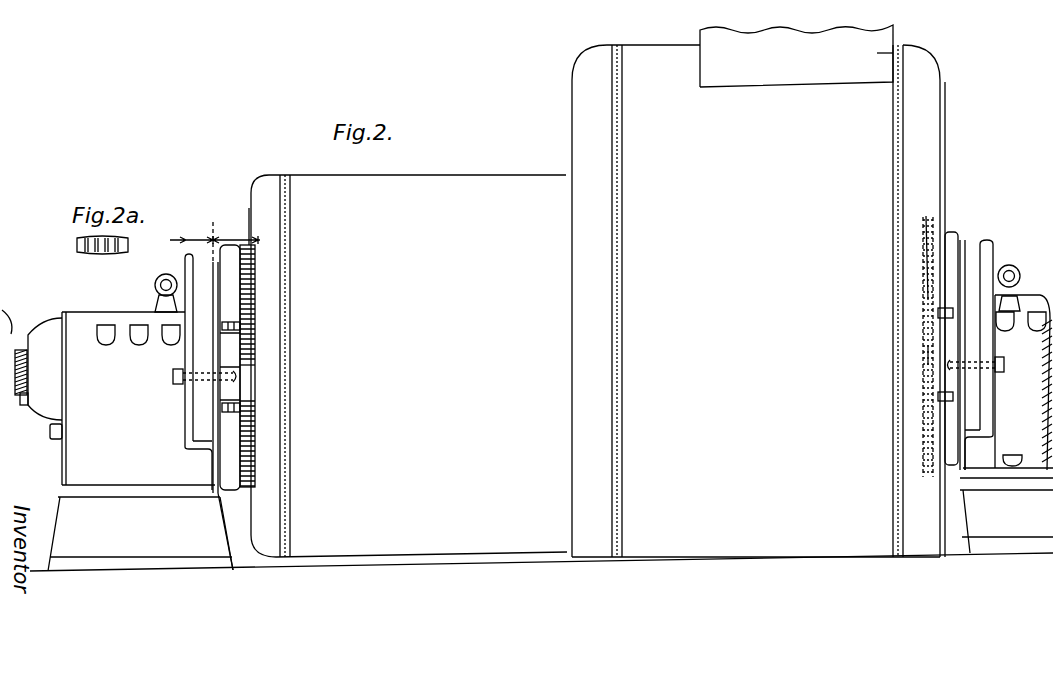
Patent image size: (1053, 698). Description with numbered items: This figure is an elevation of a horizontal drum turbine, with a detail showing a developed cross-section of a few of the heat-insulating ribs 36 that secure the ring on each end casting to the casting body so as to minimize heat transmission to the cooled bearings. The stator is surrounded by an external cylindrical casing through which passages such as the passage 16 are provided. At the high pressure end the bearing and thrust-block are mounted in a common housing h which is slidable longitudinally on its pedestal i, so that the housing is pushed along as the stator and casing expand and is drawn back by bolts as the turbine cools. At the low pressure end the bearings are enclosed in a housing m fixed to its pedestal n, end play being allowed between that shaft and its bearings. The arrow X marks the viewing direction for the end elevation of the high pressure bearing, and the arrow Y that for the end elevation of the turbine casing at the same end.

In FIG. 2, the passage through the casing 16 is at (895, 47).
In FIG. 2A, the spaced ribs 36 is at (85, 255).
In FIG. 2, the housing h is at (115, 379).
In FIG. 2, the pedestal i is at (62, 513).
In FIG. 2, the housing m is at (1029, 302).
In FIG. 2, the pedestal n is at (1034, 487).
In FIG. 2, the arrow X is at (236, 236).
In FIG. 2, the arrow Y is at (191, 227).